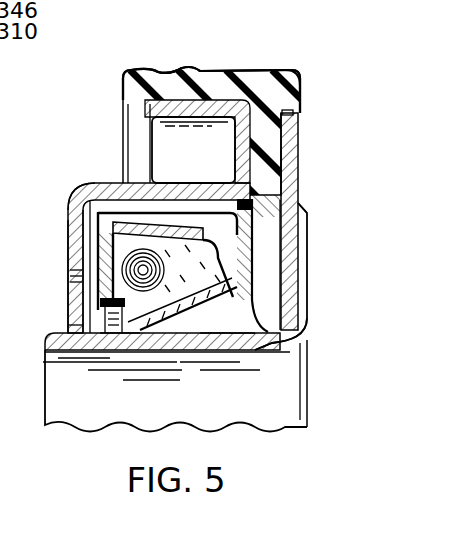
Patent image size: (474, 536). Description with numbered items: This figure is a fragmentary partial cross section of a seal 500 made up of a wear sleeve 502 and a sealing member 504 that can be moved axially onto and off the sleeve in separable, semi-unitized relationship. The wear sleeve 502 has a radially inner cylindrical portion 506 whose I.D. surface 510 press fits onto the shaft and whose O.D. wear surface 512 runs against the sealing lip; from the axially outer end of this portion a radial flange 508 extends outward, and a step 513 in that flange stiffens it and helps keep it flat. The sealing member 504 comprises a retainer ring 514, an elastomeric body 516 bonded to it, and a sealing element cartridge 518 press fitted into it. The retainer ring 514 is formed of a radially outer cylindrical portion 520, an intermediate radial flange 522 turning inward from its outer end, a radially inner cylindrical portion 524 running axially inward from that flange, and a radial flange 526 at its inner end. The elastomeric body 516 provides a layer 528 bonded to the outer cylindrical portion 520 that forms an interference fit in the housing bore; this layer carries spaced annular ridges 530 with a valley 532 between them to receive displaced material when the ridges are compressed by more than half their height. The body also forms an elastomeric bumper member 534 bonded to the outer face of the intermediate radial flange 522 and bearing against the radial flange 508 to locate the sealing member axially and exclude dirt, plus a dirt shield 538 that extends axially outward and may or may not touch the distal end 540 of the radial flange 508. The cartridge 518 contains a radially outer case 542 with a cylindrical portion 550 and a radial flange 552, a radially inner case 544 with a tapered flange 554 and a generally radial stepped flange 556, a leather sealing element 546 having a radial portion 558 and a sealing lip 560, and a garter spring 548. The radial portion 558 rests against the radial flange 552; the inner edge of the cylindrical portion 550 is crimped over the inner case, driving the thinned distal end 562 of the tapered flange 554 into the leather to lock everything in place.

The seal 500 is at (283, 68).
The wear sleeve 502 is at (315, 218).
The sealing member 504 is at (222, 52).
The radially inner cylindrical portion 506 is at (165, 335).
The radial flange 508 is at (300, 293).
The I.D. surface 510 is at (243, 345).
The O.D. wear surface 512 is at (82, 327).
The step 513 is at (306, 209).
The retainer ring 514 is at (66, 224).
The elastomeric body 516 is at (247, 71).
The sealing element cartridge 518 is at (108, 278).
The radially outer cylindrical portion 520 is at (163, 122).
The intermediate radial flange 522 is at (283, 163).
The radially inner cylindrical portion 524 is at (170, 185).
The radial flange 526 is at (73, 239).
The layer of elastomer 528 is at (137, 90).
The annular ridges 530 is at (143, 64).
The valley 532 is at (171, 71).
The elastomeric bumper member 534 is at (290, 134).
The dirt shield 538 is at (293, 82).
The distal end 540 is at (293, 107).
The radially outer case 542 is at (105, 240).
The radially inner case 544 is at (93, 262).
The leather sealing element 546 is at (205, 305).
The garter spring 548 is at (112, 300).
The cylindrical portion 550 is at (107, 176).
The radial flange 552 is at (252, 256).
The tapered flange 554 is at (122, 192).
The generally radial stepped flange 556 is at (160, 270).
The radial portion 558 is at (222, 237).
The sealing lip 560 is at (125, 330).
The distal end 562 is at (207, 312).